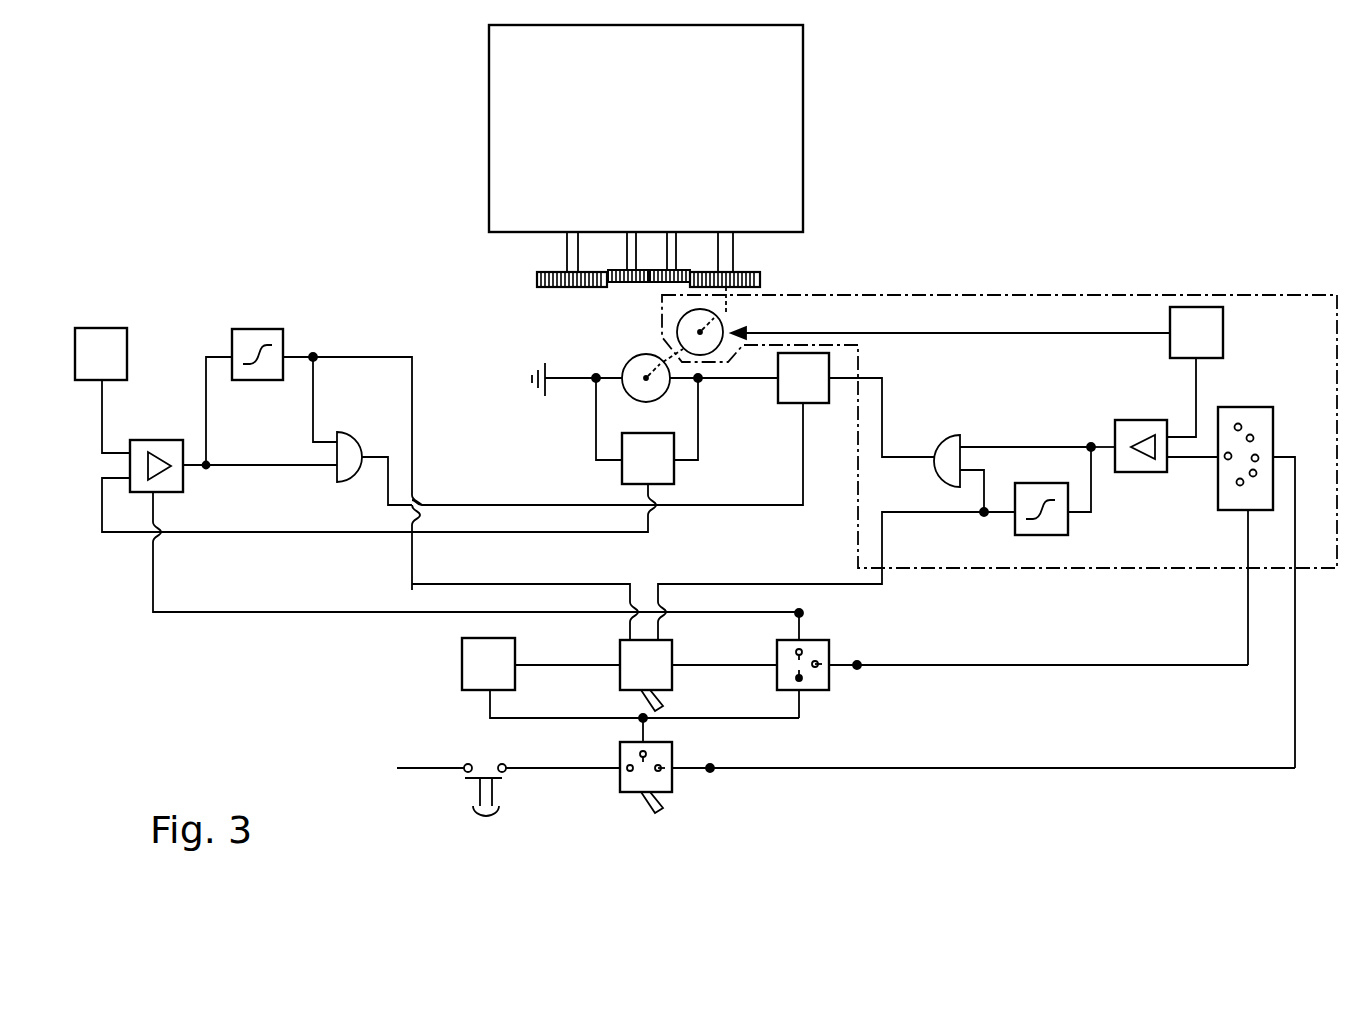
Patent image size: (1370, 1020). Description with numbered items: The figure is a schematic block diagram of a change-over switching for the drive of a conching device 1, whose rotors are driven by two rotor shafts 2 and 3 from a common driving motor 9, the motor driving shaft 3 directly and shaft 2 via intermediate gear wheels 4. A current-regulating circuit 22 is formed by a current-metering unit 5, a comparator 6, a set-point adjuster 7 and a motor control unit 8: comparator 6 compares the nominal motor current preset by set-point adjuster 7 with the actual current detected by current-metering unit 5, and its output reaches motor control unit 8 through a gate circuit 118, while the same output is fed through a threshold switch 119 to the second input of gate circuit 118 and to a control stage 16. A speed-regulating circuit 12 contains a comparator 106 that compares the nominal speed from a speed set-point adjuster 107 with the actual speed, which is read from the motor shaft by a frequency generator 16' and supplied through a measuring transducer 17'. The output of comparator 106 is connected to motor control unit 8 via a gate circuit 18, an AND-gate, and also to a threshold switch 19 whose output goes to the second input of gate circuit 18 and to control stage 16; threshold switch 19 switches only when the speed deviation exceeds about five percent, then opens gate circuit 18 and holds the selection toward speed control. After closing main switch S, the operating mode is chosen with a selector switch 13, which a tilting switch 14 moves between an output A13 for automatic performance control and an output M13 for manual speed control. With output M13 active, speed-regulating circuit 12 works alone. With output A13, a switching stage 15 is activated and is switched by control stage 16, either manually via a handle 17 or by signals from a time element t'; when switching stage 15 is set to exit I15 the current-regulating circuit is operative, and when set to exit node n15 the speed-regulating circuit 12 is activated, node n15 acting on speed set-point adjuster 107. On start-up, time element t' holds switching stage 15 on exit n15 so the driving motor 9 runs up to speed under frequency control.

The conching device 1 is at (629, 120).
The rotor shaft 2 is at (563, 248).
The rotor shaft 3 is at (737, 241).
The intermediate gear wheels 4 is at (665, 284).
The current-metering unit 5 is at (641, 472).
The comparator 6 is at (152, 440).
The set-point adjuster 7 is at (94, 365).
The motor control unit 8 is at (796, 390).
The driving motor 9 is at (628, 361).
The speed-regulating circuit 12 is at (1076, 296).
The selector switch 13 is at (615, 783).
The tilting switch 14 is at (668, 808).
The switching stage 15 is at (832, 683).
The control stage 16 is at (646, 665).
The frequency generator 16' is at (767, 303).
The handle 17 is at (682, 693).
The measuring transducer 17' is at (977, 372).
The gate circuit 18 is at (955, 436).
The threshold switch 19 is at (1012, 531).
The current-regulating circuit 22 is at (163, 302).
The comparator 106 is at (1136, 475).
The speed set-point adjuster 107 is at (1244, 407).
The gate circuit 118 is at (345, 432).
The threshold switch 119 is at (258, 329).
The output for automatic performance control A13 is at (640, 721).
The output for manual speed control M13 is at (712, 766).
The exit I15 is at (817, 619).
The exit node n15 is at (859, 664).
The main switch S is at (477, 812).
The time element t' is at (630, 678).